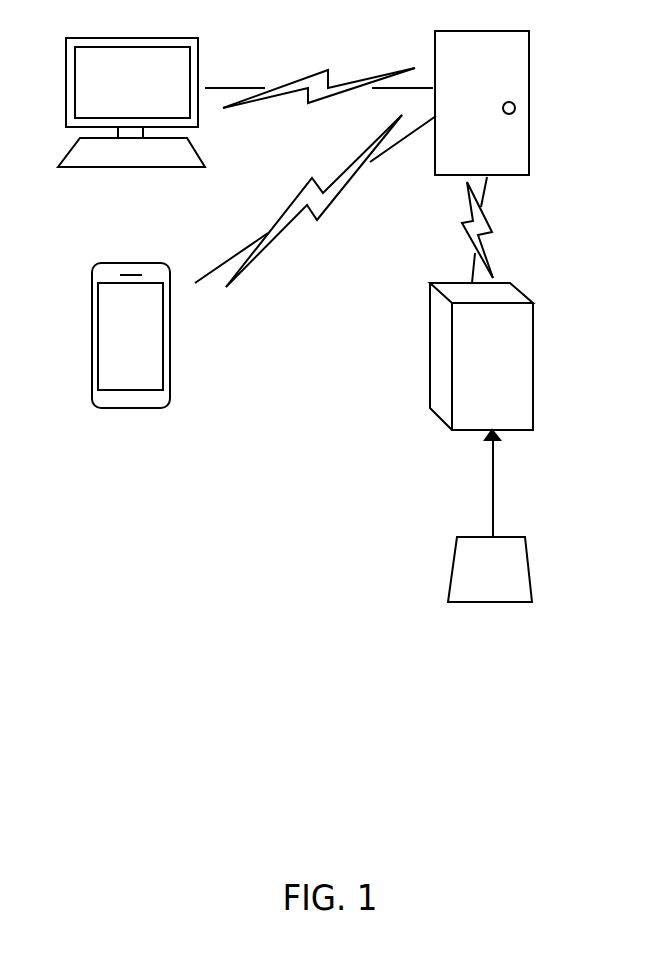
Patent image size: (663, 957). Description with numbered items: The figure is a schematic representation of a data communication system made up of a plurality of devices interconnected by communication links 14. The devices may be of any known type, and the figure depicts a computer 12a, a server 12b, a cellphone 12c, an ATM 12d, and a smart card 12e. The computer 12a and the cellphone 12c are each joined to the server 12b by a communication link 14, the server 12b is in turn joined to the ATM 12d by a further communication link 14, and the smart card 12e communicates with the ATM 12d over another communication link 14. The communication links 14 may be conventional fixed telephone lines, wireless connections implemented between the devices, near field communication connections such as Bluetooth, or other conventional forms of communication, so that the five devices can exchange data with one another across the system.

The computer 12a is at (131, 102).
The server 12b is at (482, 103).
The cellphone 12c is at (131, 335).
The ATM 12d is at (481, 356).
The smart card 12e is at (490, 569).
The communication links 14 is at (365, 282).